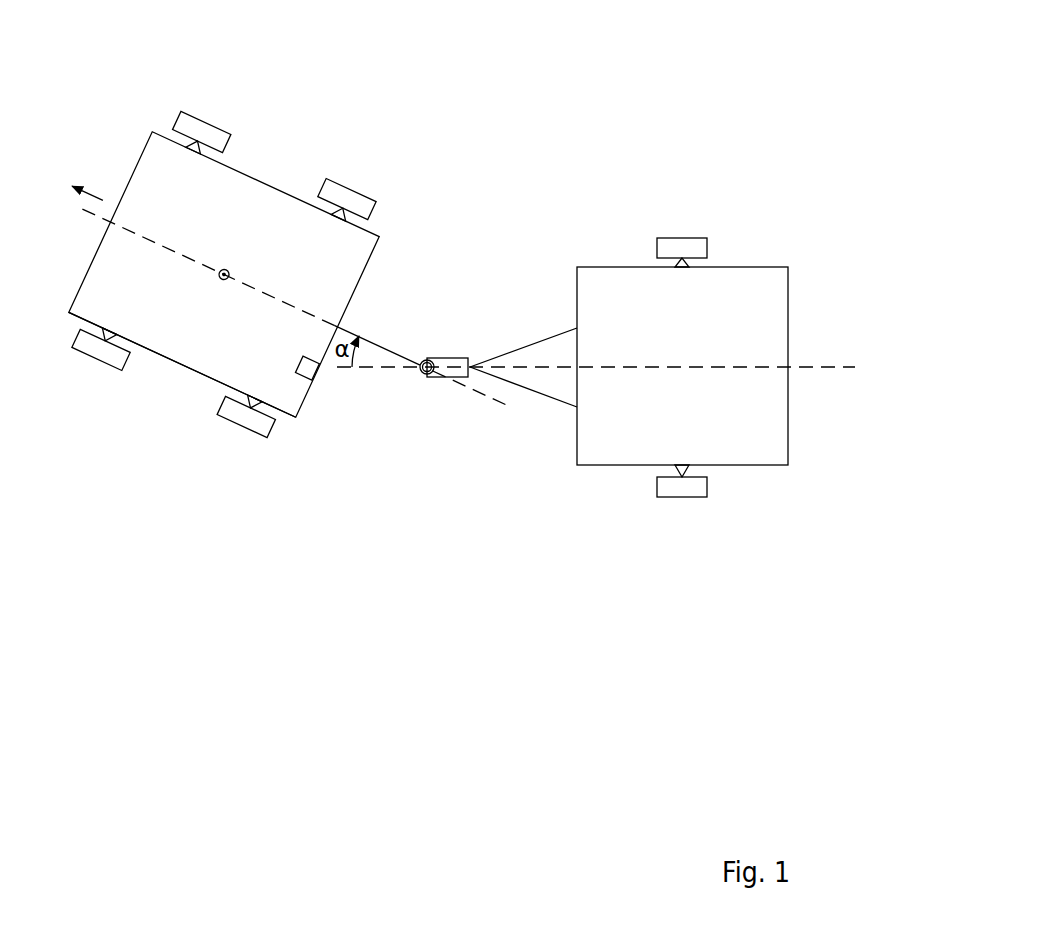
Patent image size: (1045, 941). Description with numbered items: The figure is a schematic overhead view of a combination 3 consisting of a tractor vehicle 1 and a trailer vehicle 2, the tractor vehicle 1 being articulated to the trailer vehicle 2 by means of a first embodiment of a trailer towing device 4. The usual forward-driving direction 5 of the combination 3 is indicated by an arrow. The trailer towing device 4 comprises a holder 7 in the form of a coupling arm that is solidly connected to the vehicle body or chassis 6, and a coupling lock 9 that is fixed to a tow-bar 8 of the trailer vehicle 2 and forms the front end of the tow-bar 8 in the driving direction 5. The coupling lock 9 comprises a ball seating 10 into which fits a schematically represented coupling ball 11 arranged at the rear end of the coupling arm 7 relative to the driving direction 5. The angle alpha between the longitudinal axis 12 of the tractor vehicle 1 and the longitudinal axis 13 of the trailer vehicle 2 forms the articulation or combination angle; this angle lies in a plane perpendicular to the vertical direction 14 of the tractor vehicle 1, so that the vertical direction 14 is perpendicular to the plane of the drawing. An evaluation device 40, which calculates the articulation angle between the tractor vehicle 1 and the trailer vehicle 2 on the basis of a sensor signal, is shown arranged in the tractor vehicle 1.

The tractor vehicle 1 is at (270, 164).
The trailer vehicle 2 is at (623, 253).
The combination 3 is at (527, 102).
The trailer towing device 4 is at (433, 361).
The forward-driving direction 5 is at (103, 200).
The vehicle body or chassis 6 is at (188, 358).
The holder 7 is at (352, 332).
The tow-bar 8 is at (553, 400).
The coupling lock 9 is at (463, 352).
The ball seating 10 is at (423, 378).
The coupling ball 11 is at (420, 372).
The longitudinal axis of the tractor vehicle 12 is at (193, 258).
The longitudinal axis of the trailer vehicle 13 is at (695, 367).
The vertical direction 14 is at (225, 280).
The evaluation device 40 is at (303, 377).